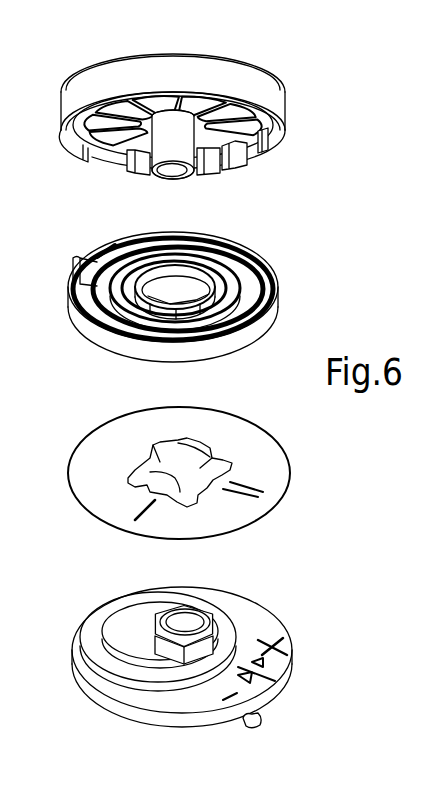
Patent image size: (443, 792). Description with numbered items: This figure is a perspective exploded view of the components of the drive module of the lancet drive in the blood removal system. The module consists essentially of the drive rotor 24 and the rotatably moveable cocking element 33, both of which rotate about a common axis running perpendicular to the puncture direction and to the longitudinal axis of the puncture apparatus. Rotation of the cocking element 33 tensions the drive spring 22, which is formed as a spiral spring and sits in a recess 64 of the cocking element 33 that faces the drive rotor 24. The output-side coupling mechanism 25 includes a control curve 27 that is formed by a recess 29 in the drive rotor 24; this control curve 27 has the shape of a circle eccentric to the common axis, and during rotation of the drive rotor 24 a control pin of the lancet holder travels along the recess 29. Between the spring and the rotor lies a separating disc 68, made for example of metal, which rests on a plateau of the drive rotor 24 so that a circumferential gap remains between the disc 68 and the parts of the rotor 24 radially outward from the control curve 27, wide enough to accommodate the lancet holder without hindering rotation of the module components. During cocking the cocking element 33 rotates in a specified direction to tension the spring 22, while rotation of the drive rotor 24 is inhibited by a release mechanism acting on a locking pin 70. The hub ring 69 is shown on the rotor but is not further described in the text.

The cocking element 33 is at (183, 114).
The recess 64 is at (230, 143).
The drive spring 22 is at (112, 338).
The separating disc 68 is at (273, 480).
The hub ring 69 is at (125, 625).
The control curve 27 is at (88, 647).
The recess 29 is at (233, 643).
The drive rotor 24 is at (125, 713).
The locking pin 70 is at (250, 728).
The output-side coupling mechanism 25 is at (186, 662).